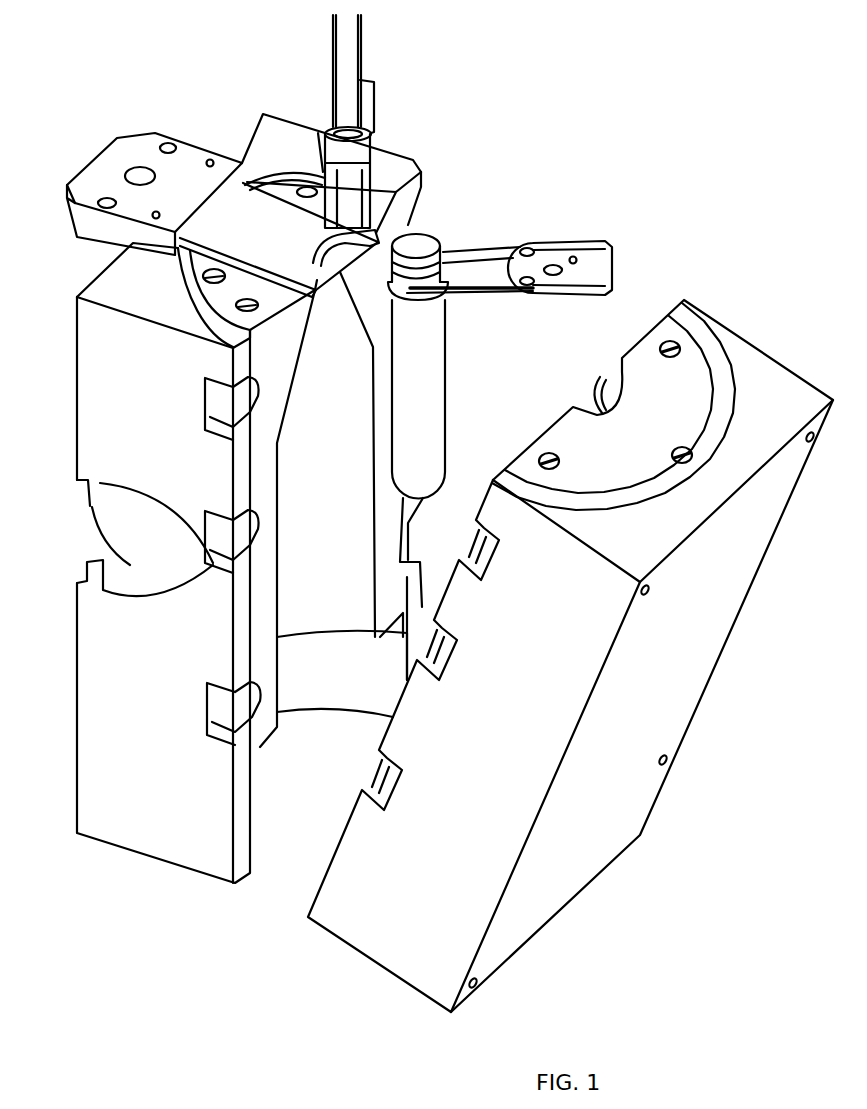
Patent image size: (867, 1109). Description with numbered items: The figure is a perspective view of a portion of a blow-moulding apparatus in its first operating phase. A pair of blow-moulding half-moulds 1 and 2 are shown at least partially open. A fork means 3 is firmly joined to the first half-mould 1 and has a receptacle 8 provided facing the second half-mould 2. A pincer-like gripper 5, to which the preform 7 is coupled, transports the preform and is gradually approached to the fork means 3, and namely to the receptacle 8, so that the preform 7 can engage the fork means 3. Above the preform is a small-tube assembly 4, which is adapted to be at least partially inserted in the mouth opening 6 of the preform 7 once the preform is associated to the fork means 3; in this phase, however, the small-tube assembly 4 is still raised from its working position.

The first blow-moulding half-mould 1 is at (160, 303).
The second blow-moulding half-mould 2 is at (753, 377).
The fork means 3 is at (245, 235).
The small-tube assembly 4 is at (361, 121).
The pincer-like gripper 5 is at (480, 250).
The mouth opening 6 is at (413, 275).
The preform 7 is at (442, 358).
The receptacle 8 is at (338, 280).